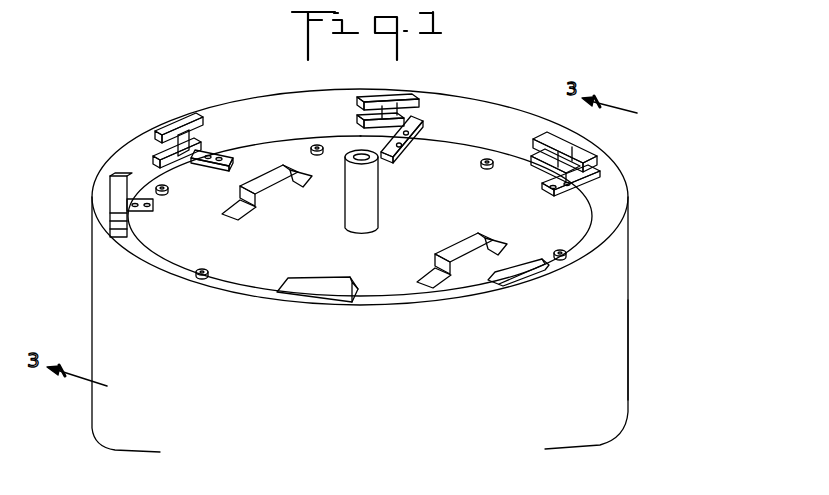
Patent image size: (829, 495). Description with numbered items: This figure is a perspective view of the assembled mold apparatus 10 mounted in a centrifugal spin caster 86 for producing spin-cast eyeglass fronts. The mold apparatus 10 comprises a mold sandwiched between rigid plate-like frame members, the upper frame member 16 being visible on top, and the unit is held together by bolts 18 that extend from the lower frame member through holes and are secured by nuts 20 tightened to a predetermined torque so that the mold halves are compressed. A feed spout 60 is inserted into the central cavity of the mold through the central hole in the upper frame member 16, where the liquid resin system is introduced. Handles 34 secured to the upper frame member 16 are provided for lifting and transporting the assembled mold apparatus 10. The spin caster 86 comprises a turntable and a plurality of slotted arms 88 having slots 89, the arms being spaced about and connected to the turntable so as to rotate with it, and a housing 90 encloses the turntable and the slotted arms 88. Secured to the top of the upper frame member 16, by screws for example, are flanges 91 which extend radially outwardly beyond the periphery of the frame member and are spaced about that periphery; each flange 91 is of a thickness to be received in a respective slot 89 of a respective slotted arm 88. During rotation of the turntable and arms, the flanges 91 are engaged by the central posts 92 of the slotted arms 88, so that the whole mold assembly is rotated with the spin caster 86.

The mold apparatus 10 is at (456, 167).
The upper frame member 16 is at (438, 227).
The bolt 18 is at (205, 271).
The nut 20 is at (212, 273).
The handle 34 is at (268, 190).
The feed spout 60 is at (372, 183).
The spin caster 86 is at (631, 308).
The slotted arm 88 is at (390, 94).
The slot 89 is at (210, 132).
The housing 90 is at (607, 347).
The flange 91 is at (545, 187).
The central post 92 is at (190, 132).